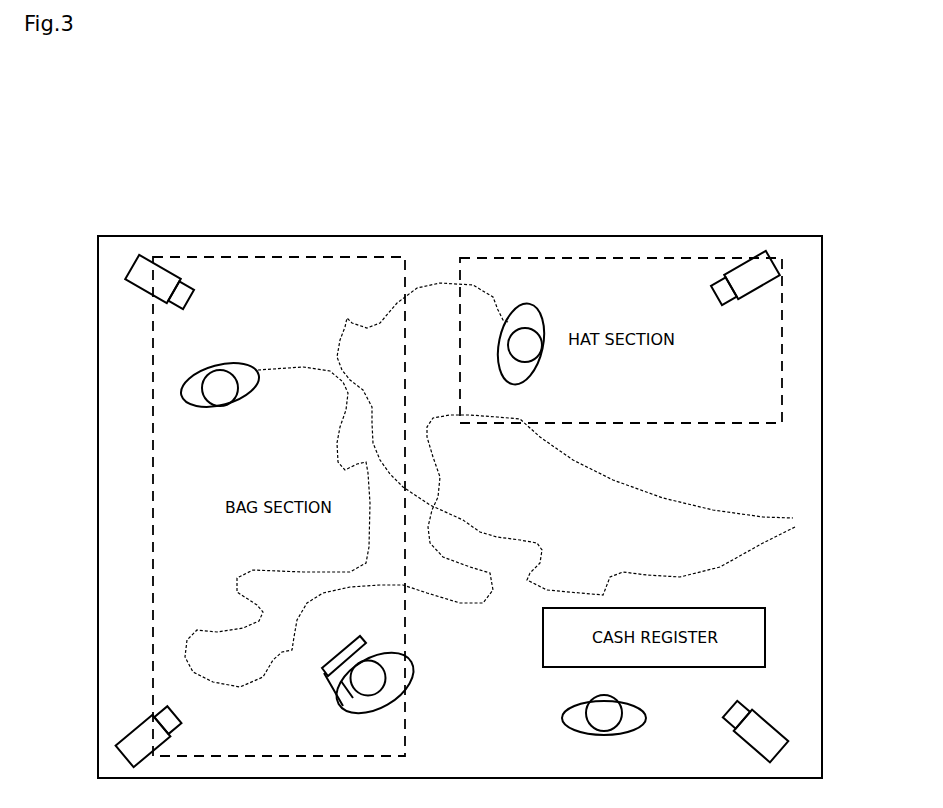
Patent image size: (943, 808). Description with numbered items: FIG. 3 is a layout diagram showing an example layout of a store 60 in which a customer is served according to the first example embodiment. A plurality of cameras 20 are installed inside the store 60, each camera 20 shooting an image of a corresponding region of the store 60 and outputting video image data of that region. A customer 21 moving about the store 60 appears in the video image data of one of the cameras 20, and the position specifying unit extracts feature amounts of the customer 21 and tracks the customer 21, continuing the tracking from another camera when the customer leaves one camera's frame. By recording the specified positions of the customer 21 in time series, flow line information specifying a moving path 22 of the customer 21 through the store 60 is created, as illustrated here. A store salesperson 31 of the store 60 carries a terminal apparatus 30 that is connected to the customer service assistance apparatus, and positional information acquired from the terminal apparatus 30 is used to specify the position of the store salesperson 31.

The store 60 is at (522, 236).
The camera 20 is at (188, 285).
The customer 21 is at (240, 363).
The moving path 22 is at (297, 367).
The terminal apparatus 30 is at (340, 647).
The store salesperson 31 is at (368, 660).